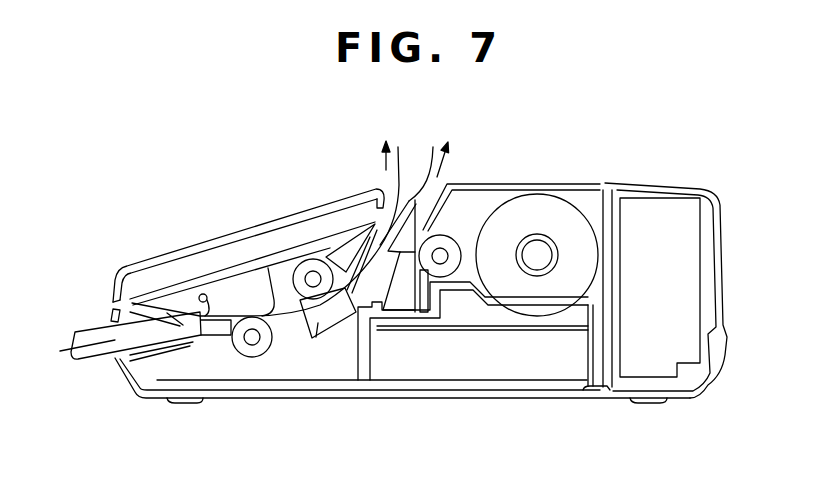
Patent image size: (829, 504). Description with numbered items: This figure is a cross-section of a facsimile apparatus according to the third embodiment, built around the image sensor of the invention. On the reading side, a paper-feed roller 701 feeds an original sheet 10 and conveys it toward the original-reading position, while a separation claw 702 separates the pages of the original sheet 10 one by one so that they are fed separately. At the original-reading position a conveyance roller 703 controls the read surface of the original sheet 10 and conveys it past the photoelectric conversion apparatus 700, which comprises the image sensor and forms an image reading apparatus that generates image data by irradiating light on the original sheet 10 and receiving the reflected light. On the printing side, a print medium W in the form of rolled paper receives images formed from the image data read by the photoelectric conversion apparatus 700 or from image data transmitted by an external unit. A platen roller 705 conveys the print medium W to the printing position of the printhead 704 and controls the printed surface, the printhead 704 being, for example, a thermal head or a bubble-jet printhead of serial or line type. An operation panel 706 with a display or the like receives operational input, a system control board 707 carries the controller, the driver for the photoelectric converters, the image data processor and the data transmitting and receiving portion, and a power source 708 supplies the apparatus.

The original sheet 10 is at (396, 203).
The print medium W is at (533, 207).
The photoelectric conversion apparatus 700 is at (318, 323).
The paper-feed roller 701 is at (250, 356).
The separation claw 702 is at (229, 320).
The conveyance roller 703 is at (310, 266).
The printhead 704 is at (407, 287).
The platen roller 705 is at (452, 238).
The operation panel 706 is at (217, 242).
The system control board 707 is at (512, 381).
The power source 708 is at (638, 215).